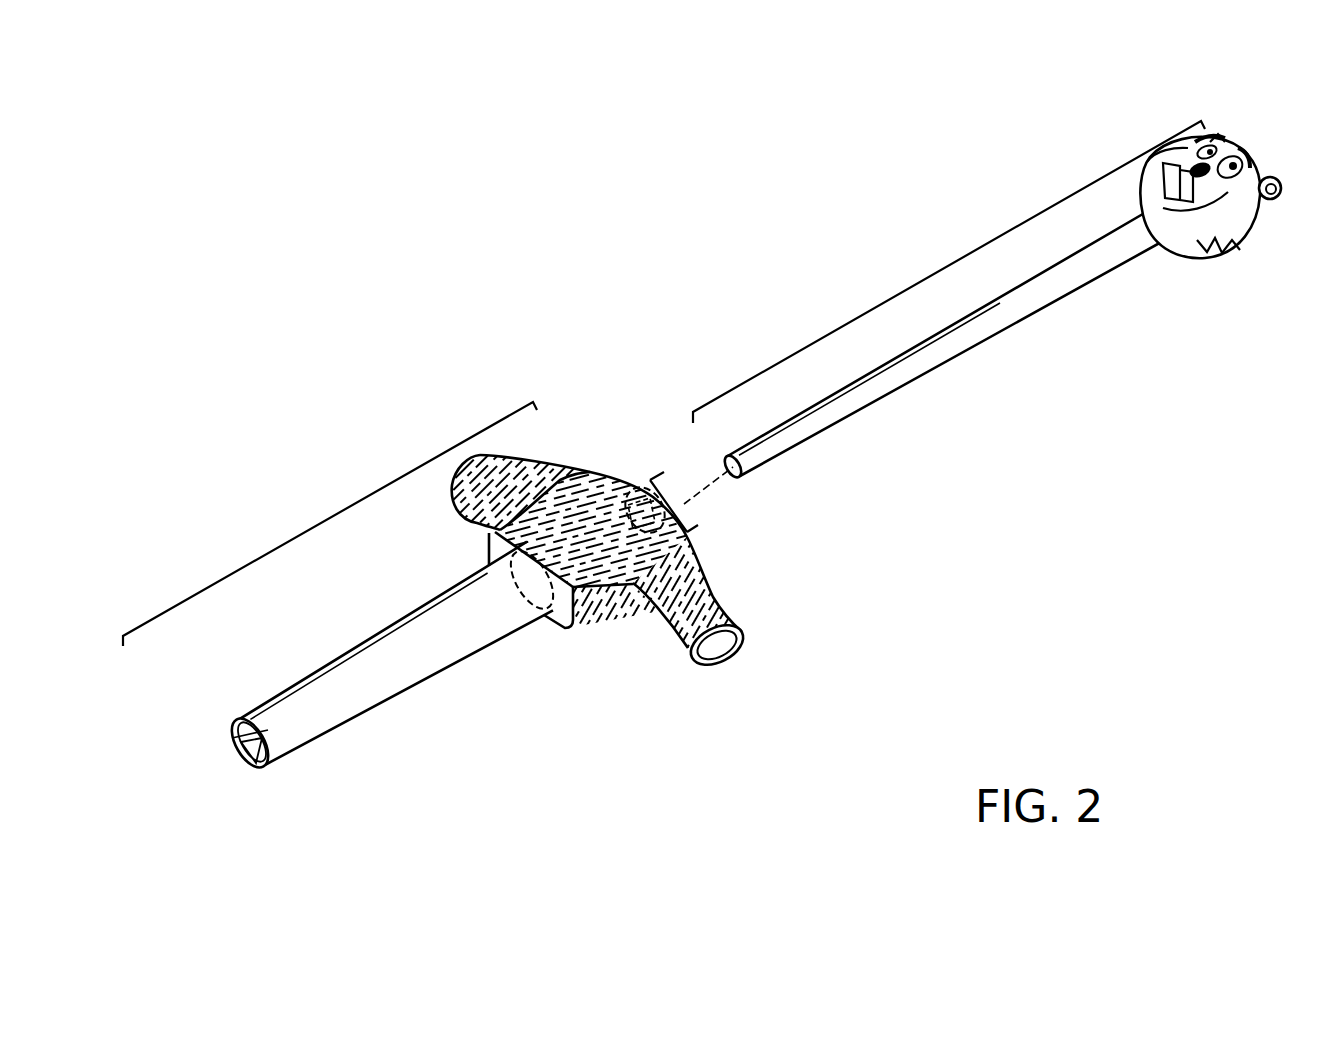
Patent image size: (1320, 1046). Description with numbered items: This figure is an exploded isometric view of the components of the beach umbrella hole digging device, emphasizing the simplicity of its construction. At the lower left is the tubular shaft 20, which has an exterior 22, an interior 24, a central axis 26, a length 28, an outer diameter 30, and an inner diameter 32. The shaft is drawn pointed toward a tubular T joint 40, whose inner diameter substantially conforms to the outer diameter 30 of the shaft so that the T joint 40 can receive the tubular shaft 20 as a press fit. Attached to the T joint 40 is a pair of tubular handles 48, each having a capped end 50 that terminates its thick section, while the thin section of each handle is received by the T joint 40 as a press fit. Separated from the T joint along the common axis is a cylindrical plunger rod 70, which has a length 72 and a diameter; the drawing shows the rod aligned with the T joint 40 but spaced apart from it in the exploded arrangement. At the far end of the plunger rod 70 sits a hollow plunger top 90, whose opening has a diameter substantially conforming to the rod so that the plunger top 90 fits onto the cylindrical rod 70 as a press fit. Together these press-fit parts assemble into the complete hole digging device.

The tubular shaft 20 is at (340, 702).
The exterior 22 is at (340, 709).
The interior 24 is at (223, 781).
The central axis 26 is at (700, 461).
The length 28 is at (453, 612).
The outer diameter 30 is at (686, 505).
The inner diameter 32 is at (253, 772).
The tubular T joint 40 is at (633, 480).
The pair of tubular handles 48 is at (619, 538).
The capped end 50 is at (705, 658).
The cylindrical plunger rod 70 is at (899, 417).
The length 72 is at (987, 285).
The hollow plunger top 90 is at (1158, 112).